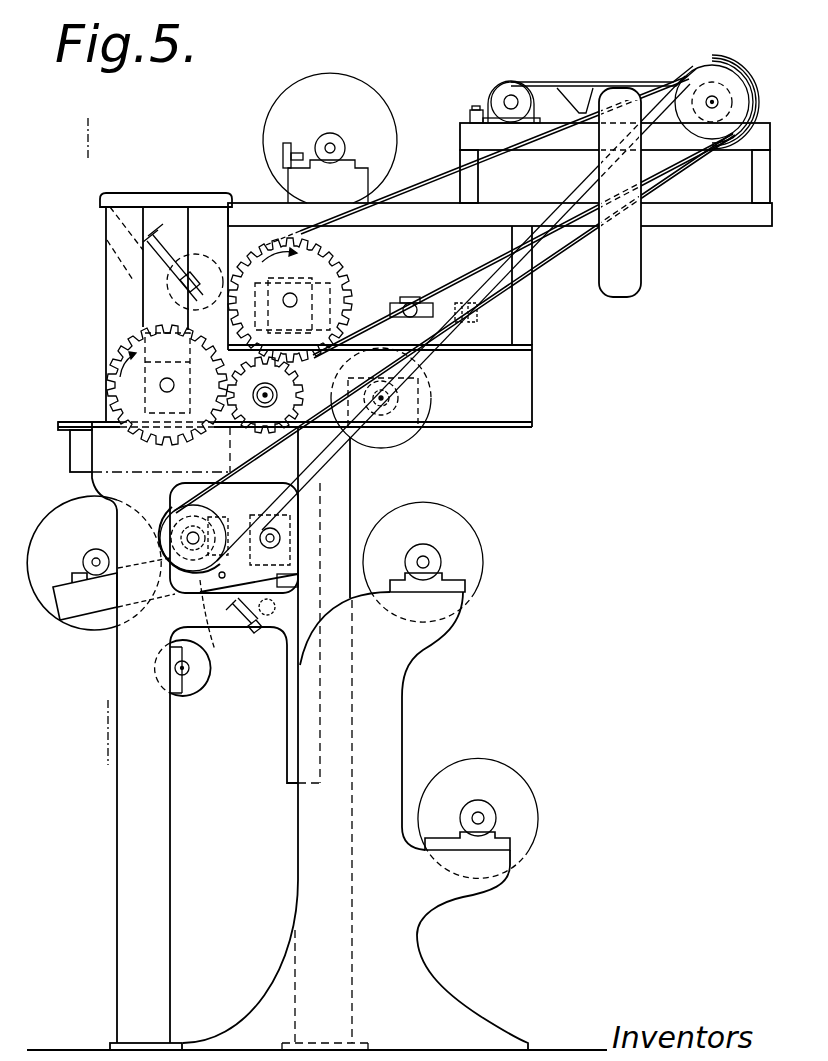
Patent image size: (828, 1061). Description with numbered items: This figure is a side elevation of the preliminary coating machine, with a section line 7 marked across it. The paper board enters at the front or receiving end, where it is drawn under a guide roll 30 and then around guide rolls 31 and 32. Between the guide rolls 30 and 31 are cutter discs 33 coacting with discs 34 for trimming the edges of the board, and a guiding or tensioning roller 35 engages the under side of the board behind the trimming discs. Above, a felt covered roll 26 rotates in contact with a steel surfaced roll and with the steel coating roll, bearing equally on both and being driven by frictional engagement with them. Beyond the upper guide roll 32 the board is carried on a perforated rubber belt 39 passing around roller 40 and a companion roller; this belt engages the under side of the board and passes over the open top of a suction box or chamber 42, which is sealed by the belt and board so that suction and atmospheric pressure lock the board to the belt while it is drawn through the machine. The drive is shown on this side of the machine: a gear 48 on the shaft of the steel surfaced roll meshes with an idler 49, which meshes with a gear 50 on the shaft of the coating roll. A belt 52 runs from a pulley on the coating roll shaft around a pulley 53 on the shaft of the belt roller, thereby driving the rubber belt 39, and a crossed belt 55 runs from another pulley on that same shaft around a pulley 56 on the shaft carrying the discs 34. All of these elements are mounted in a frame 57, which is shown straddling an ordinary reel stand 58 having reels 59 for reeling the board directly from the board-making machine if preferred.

The section line 7- 7 is at (98, 128).
The felt covered roll 26 is at (183, 243).
The guide roll 30 is at (55, 600).
The guide roll 31 is at (412, 436).
The guide roll 32 is at (360, 100).
The cutter discs 33 is at (202, 650).
The discs 34 is at (266, 530).
The guiding or tensioning roller 35 is at (150, 597).
The perforated rubber belt 39 is at (610, 88).
The roller 40 is at (508, 85).
The suction box or chamber 42 is at (573, 90).
The gear 48 is at (122, 389).
The idler 49 is at (290, 378).
The gear 50 is at (342, 266).
The belt 52 is at (437, 172).
The pulley 53 is at (715, 78).
The crossed belt 55 is at (527, 302).
The pulley 56 is at (201, 521).
The frame 57 is at (341, 476).
The reel stand 58 is at (393, 728).
The reels 59 is at (473, 568).